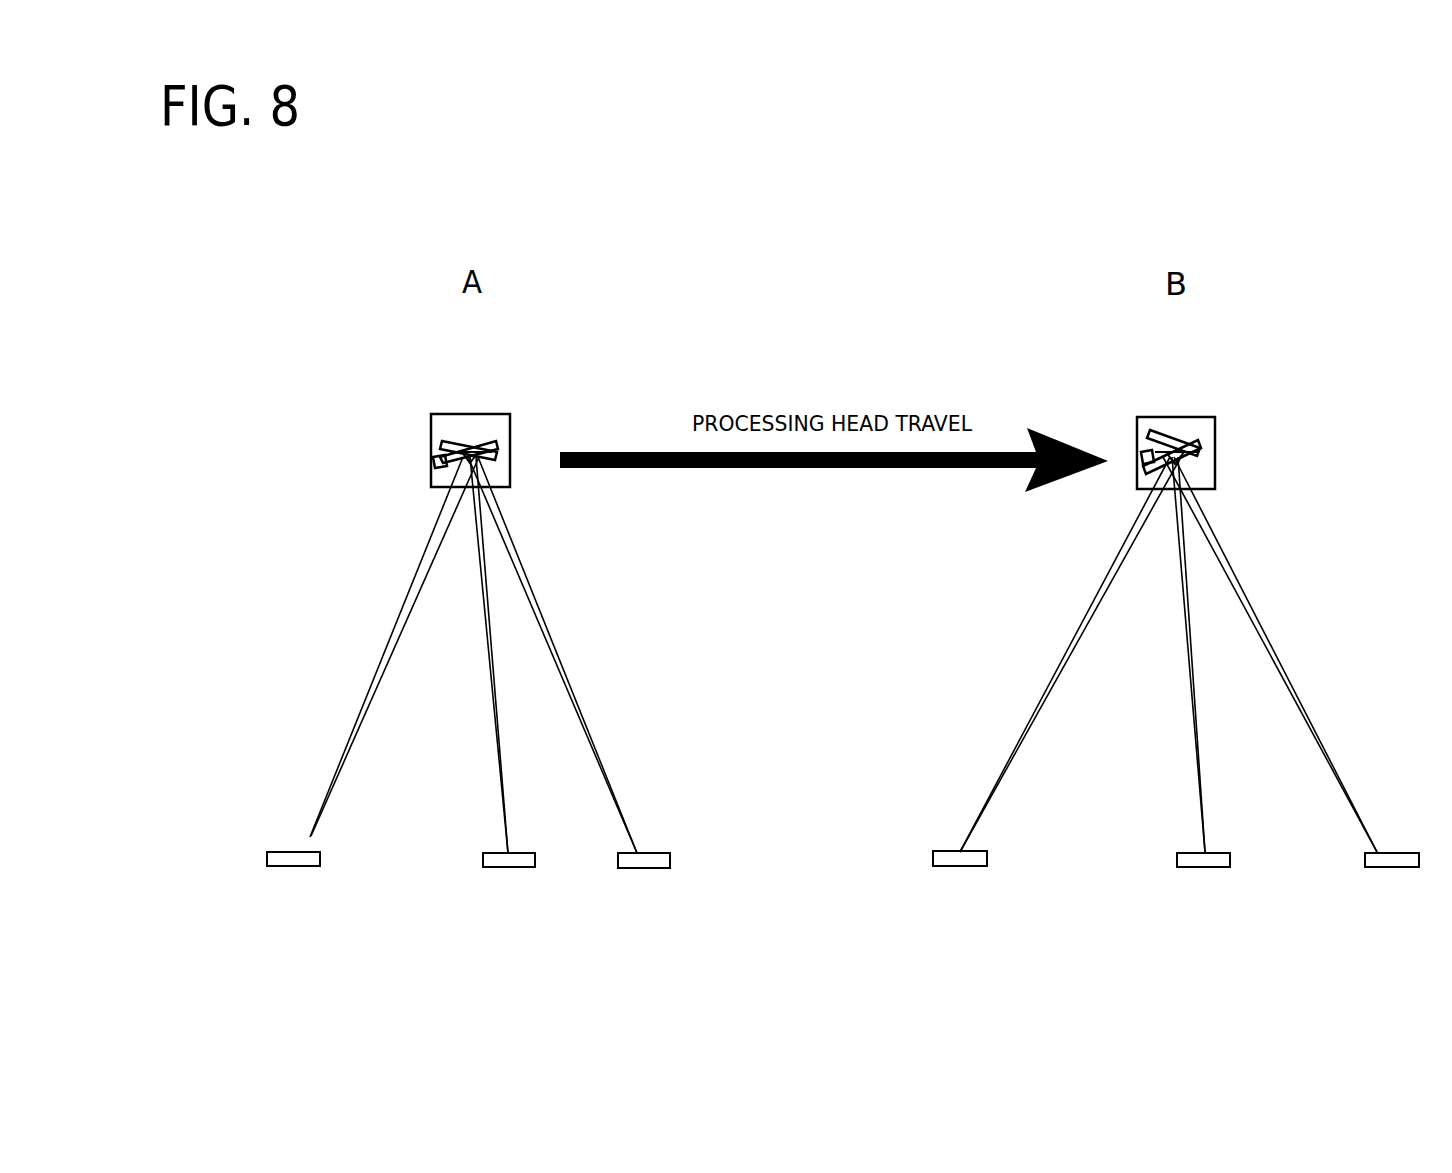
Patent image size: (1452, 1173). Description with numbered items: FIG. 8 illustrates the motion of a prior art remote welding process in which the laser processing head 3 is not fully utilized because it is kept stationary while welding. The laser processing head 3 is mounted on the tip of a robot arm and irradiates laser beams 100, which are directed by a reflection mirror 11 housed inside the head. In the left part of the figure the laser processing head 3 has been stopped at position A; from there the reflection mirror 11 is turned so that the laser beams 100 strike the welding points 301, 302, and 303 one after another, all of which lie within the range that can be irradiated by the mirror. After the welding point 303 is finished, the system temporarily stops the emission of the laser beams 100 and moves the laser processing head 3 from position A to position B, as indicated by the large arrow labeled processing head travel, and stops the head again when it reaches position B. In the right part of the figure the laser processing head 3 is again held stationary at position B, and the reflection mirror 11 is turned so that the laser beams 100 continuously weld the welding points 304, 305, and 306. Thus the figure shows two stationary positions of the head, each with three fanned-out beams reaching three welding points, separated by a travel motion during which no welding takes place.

The laser processing head 3 is at (470, 406).
The reflection mirror 11 is at (431, 445).
The laser beams 100 is at (831, 655).
The welding point 301 is at (283, 903).
The welding point 302 is at (495, 904).
The welding point 303 is at (627, 904).
The welding point 304 is at (941, 903).
The welding point 305 is at (1185, 904).
The welding point 306 is at (1380, 904).